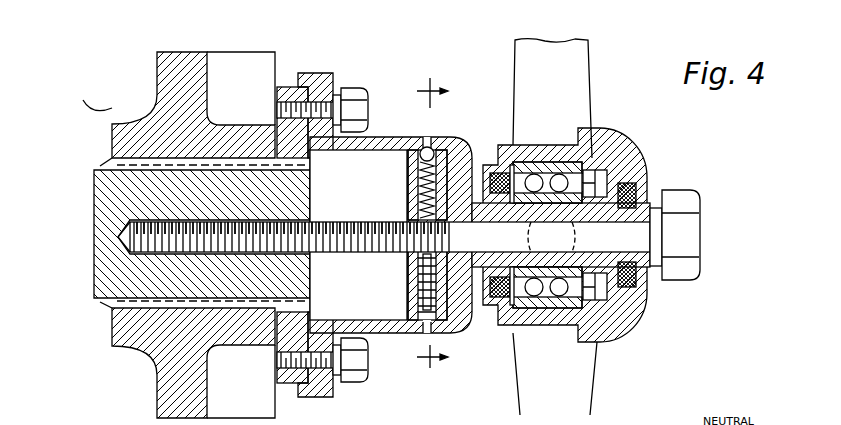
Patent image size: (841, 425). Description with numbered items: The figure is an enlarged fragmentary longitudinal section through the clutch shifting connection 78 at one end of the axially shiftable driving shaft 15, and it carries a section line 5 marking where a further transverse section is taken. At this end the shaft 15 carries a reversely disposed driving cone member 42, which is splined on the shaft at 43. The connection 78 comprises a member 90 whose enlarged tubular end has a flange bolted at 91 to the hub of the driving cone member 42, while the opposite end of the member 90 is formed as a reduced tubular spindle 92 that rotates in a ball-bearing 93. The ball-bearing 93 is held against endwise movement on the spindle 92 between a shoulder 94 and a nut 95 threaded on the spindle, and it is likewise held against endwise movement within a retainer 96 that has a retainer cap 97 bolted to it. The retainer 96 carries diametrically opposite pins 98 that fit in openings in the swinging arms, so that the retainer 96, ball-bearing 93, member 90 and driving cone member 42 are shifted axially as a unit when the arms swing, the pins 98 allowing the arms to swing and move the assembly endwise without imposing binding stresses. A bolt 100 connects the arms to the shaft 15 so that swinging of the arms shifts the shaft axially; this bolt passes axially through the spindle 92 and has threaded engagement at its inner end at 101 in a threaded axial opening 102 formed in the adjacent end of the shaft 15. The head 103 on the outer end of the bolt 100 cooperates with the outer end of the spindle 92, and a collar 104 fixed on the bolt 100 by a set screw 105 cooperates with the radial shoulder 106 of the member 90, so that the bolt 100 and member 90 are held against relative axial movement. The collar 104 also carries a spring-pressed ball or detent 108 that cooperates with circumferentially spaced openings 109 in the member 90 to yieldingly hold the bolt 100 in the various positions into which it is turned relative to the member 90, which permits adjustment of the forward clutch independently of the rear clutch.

The section line 5- 5 is at (432, 221).
The shaft 15 is at (113, 200).
The driving cone member 42 is at (168, 91).
The spline 43 is at (110, 162).
The clutch shifting connection 78 is at (641, 345).
The member 90 is at (460, 318).
The bolt 91 is at (352, 93).
The spindle 92 is at (634, 306).
The ball-bearing 93 is at (557, 330).
The shoulder 94 is at (510, 212).
The nut 95 is at (640, 184).
The retainer 96 is at (562, 145).
The retainer cap 97 is at (627, 168).
The pins 98 is at (578, 233).
The bolt 100 is at (341, 221).
The threaded engagement 101 is at (237, 233).
The threaded axial opening 102 is at (120, 236).
The head 103 is at (687, 203).
The collar 104 is at (417, 260).
The set screw 105 is at (417, 272).
The radial shoulder 106 is at (455, 176).
The spring-pressed ball or detent 108 is at (407, 165).
The openings 109 is at (435, 137).